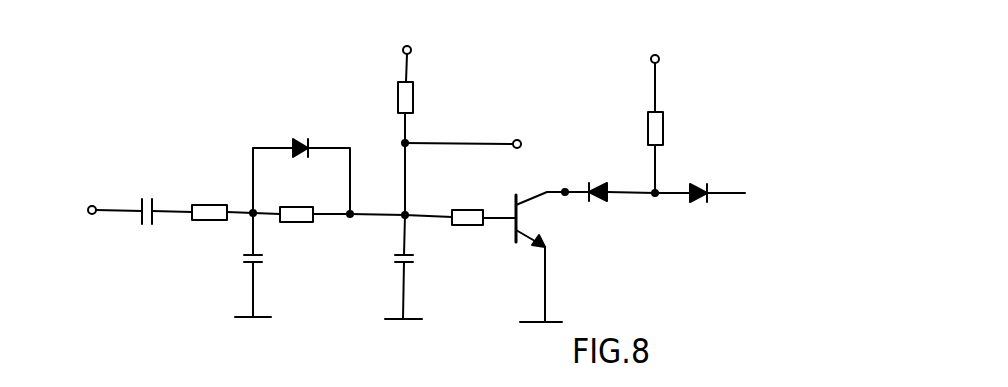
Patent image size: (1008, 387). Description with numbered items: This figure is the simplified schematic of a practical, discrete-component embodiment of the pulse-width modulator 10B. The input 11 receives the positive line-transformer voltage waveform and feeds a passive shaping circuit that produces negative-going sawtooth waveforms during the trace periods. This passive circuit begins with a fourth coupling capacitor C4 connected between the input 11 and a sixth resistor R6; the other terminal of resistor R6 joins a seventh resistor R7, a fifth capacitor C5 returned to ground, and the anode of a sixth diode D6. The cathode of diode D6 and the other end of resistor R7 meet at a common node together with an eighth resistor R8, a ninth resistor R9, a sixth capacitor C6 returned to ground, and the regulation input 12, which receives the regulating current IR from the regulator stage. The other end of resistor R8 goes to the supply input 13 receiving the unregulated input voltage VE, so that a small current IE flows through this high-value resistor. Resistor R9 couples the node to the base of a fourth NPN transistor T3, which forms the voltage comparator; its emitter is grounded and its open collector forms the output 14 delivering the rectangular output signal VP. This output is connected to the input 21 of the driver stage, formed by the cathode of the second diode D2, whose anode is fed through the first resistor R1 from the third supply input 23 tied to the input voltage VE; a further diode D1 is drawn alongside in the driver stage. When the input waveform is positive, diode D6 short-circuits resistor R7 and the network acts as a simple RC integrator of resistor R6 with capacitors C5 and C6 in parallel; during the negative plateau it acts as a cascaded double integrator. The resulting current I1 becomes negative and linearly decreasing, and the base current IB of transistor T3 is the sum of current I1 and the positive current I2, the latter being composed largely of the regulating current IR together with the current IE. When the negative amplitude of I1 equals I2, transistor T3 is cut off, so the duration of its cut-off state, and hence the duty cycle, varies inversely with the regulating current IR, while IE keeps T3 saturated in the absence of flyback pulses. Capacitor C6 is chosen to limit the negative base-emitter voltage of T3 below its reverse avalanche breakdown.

The pulse-width modulator 10B is at (354, 92).
The input 11 is at (95, 205).
The regulation input 12 is at (520, 140).
The supply input 13 is at (411, 52).
The output 14 is at (562, 190).
The input of the driver stage 21 is at (567, 195).
The third supply input 23 is at (659, 61).
The fourth coupling capacitor C4 is at (153, 222).
The fifth capacitor C5 is at (262, 266).
The sixth capacitor C6 is at (426, 264).
The sixth resistor R6 is at (199, 187).
The seventh resistor R7 is at (312, 188).
The eighth resistor R8 is at (413, 100).
The ninth resistor R9 is at (455, 228).
The first resistor R1 is at (664, 135).
The sixth diode D6 is at (303, 131).
The second diode D2 is at (599, 197).
The diode D1 is at (700, 200).
The fourth NPN transistor T3 is at (512, 208).
The current I1 is at (392, 200).
The current I2 is at (423, 150).
The base current IB is at (480, 200).
The current IE is at (388, 112).
The regulating current IR is at (520, 126).
The output voltage VP is at (563, 220).